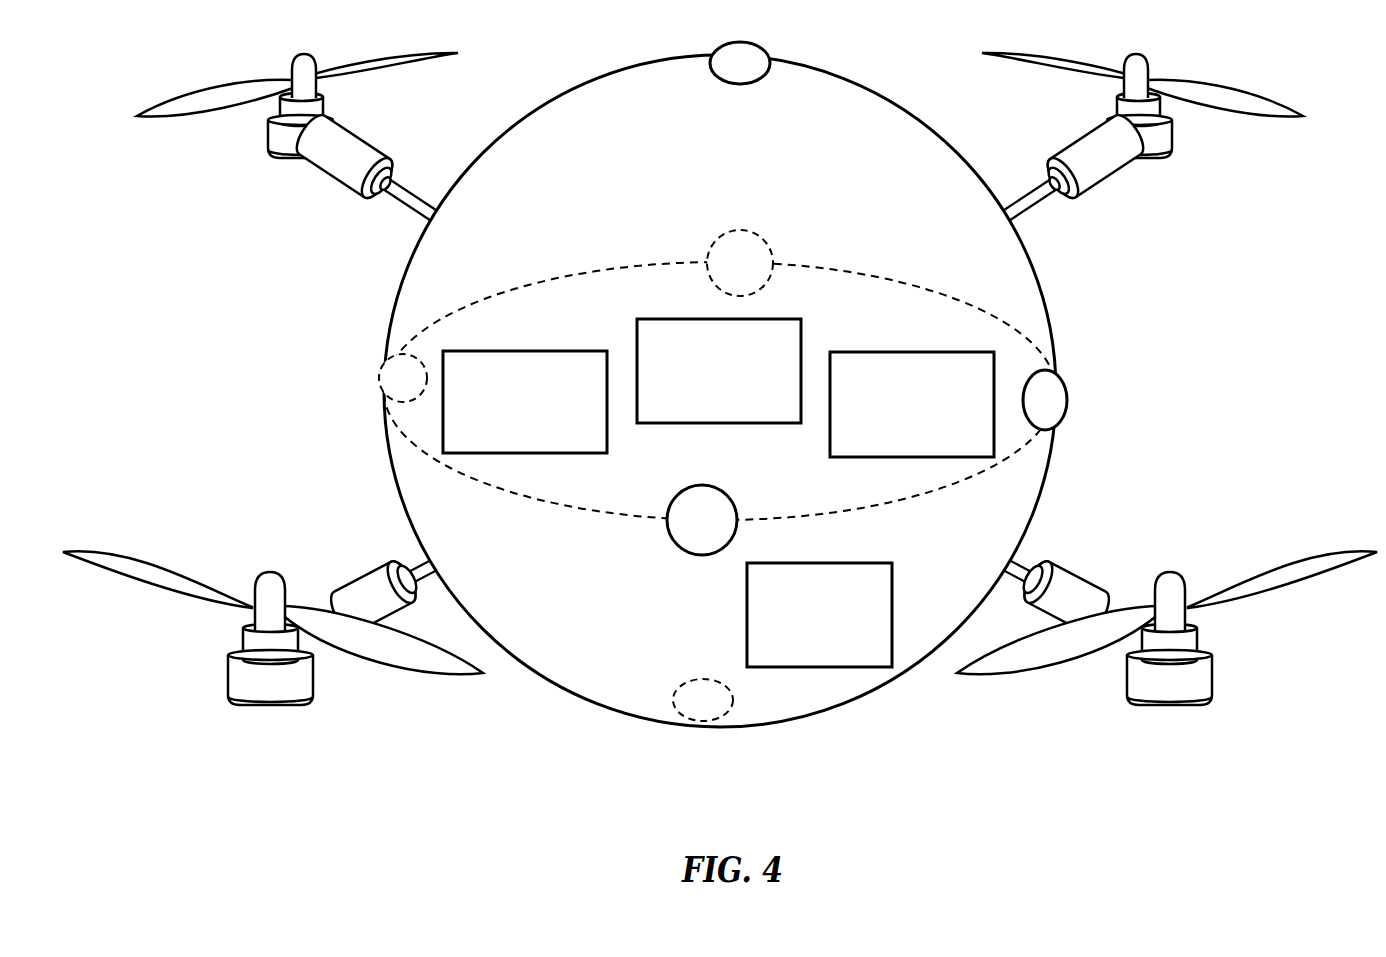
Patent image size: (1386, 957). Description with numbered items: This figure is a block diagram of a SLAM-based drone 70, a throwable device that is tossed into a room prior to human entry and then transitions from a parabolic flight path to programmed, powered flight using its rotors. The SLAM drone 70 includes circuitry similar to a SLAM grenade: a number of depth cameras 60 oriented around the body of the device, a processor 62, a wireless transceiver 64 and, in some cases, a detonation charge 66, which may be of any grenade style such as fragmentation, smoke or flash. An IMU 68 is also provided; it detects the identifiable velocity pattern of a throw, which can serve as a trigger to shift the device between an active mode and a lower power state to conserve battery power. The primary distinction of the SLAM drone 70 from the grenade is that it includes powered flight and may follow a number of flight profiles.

The depth cameras 60 is at (725, 77).
The processor 62 is at (705, 401).
The wireless transceiver 64 is at (511, 447).
The detonation charge 66 is at (927, 449).
The IMU 68 is at (805, 644).
The SLAM drone 70 is at (932, 710).